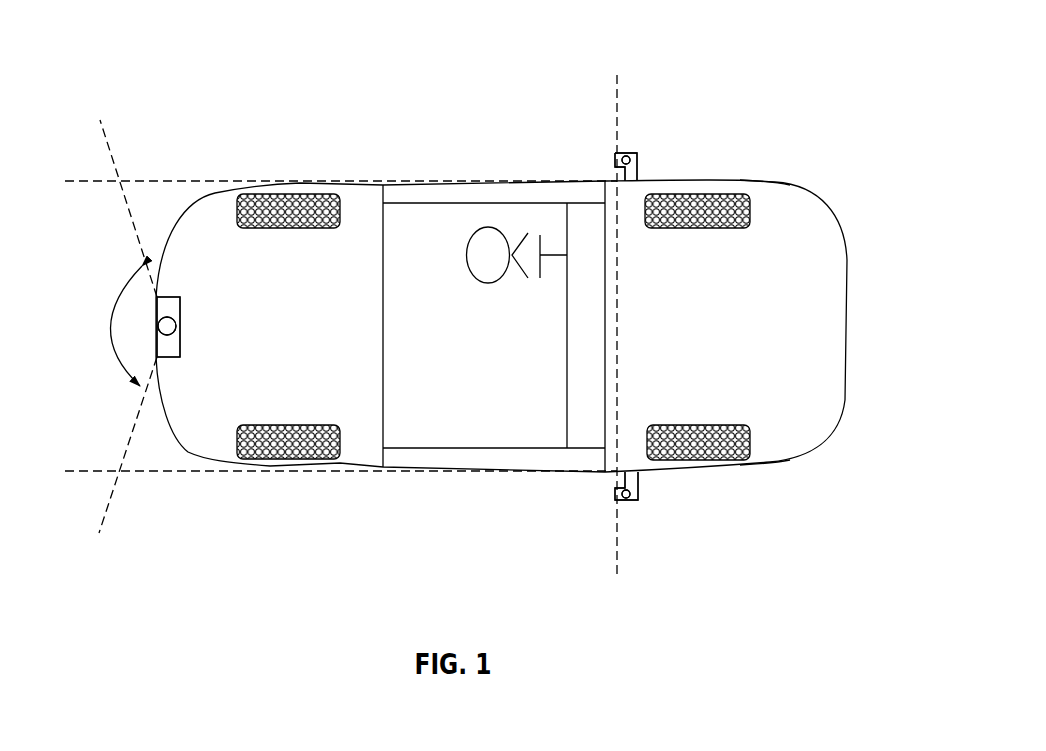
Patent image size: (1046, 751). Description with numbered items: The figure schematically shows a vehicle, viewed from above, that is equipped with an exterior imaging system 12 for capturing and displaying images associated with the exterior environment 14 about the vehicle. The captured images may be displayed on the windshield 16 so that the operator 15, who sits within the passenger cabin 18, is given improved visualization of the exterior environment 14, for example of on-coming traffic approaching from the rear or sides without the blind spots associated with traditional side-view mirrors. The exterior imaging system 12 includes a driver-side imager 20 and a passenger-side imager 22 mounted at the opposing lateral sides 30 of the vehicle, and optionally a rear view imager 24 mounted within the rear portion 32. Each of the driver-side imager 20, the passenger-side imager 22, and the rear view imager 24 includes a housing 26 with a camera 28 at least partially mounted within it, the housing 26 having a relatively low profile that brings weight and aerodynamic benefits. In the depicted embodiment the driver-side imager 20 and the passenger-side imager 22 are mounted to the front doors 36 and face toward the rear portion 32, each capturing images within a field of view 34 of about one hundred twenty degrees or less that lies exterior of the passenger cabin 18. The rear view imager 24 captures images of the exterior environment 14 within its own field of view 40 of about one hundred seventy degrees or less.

The exterior imaging system 12 is at (501, 346).
The exterior environment 14 is at (253, 514).
The operator 15 is at (488, 257).
The windshield 16 is at (590, 337).
The passenger cabin 18 is at (497, 303).
The driver-side imager 20 is at (665, 125).
The passenger-side imager 22 is at (648, 519).
The rear view imager 24 is at (215, 320).
The housing 26 is at (180, 357).
The camera 28 is at (176, 328).
The lateral sides 30 is at (763, 182).
The rear portion 32 is at (208, 222).
The field of view 34 is at (614, 128).
The front doors 36 is at (492, 198).
The field of view 40 is at (97, 327).